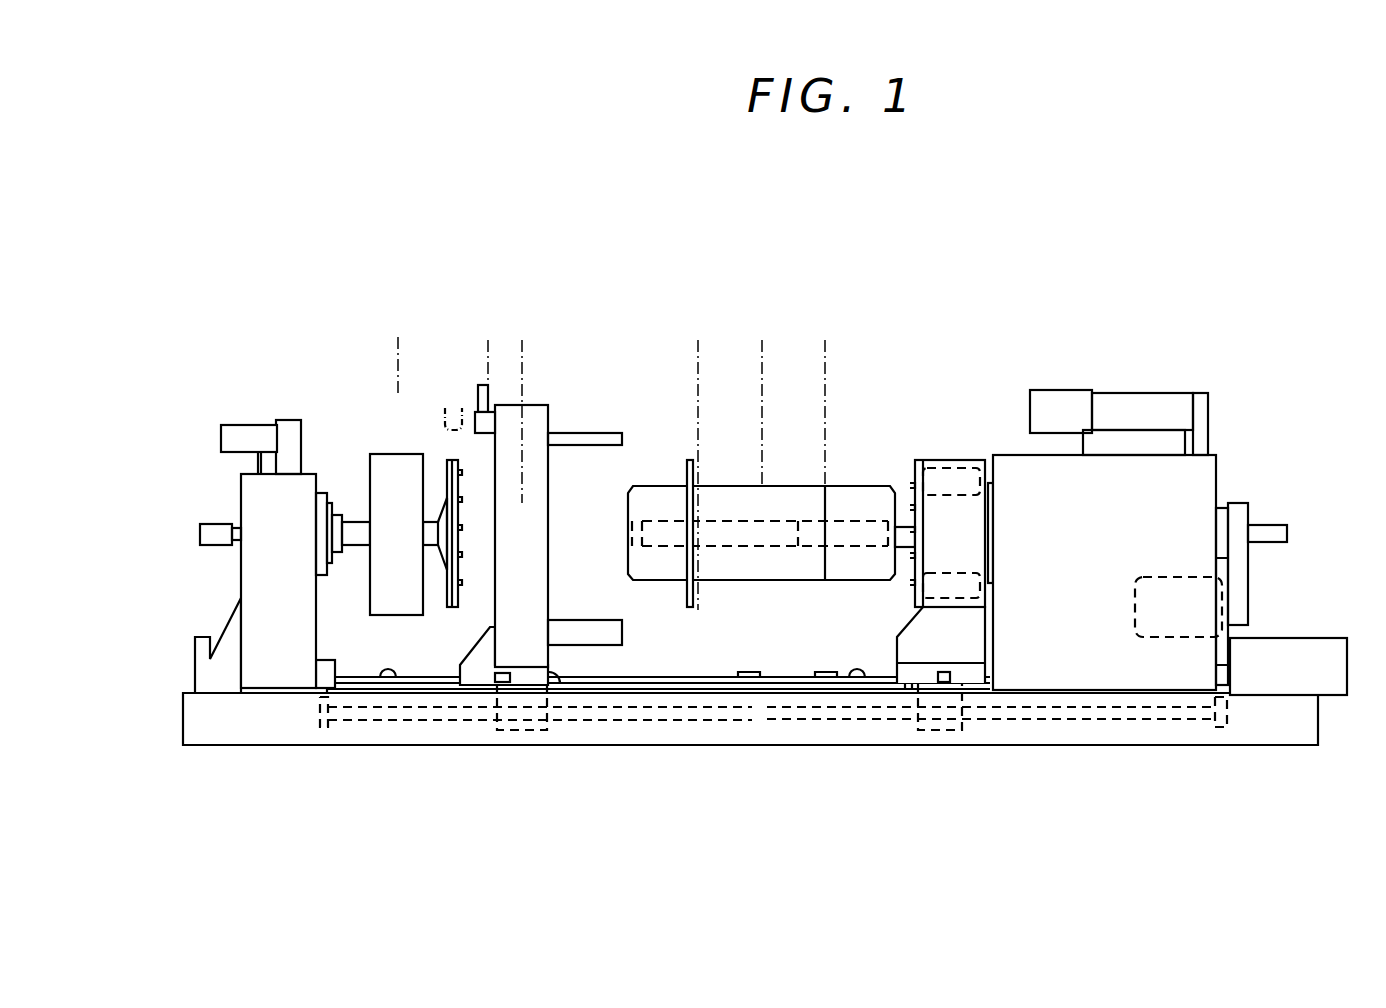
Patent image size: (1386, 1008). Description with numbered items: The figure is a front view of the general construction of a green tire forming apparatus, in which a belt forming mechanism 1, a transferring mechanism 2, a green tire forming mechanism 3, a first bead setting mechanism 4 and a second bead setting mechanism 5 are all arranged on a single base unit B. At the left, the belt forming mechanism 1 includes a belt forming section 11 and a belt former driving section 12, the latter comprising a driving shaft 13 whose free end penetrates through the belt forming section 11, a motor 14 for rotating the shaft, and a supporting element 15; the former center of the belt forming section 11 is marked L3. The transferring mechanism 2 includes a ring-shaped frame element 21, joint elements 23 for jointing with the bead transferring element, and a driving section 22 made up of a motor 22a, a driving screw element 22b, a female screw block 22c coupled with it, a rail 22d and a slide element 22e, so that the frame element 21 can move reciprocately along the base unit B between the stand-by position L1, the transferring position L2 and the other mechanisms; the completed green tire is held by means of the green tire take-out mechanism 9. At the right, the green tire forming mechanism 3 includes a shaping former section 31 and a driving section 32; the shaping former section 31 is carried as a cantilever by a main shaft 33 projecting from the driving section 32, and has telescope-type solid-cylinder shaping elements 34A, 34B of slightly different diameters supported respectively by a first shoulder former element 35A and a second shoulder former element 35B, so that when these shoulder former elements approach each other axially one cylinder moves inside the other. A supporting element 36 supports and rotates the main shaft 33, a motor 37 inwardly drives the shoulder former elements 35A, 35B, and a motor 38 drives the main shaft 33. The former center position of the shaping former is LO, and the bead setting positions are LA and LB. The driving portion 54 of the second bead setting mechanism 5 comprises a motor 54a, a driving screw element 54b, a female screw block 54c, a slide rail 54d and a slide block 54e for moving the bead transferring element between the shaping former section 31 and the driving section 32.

The belt forming mechanism 1 is at (337, 253).
The transferring mechanism 2 is at (554, 248).
The green tire forming mechanism 3 is at (1047, 258).
The first bead setting mechanism 4 is at (444, 457).
The second bead setting mechanism 5 is at (946, 457).
The green tire take-out mechanism 9 is at (592, 421).
The belt forming section 11 is at (378, 442).
The belt former driving section 12 is at (244, 470).
The driving shaft 13 is at (348, 550).
The motor 14 is at (262, 420).
The supporting element 15 is at (240, 495).
The ring-shaped frame element 21 is at (542, 407).
The driving section 22 is at (607, 823).
The motor 22a is at (192, 660).
The driving screw element 22b is at (343, 717).
The female screw block 22c is at (500, 733).
The rail 22d is at (395, 679).
The slide element 22e is at (552, 684).
The joint elements 23 is at (493, 386).
The shaping former section 31 is at (769, 456).
The driving section 32 is at (1168, 472).
The main shaft 33 is at (780, 547).
The shaping element 34A is at (720, 583).
The shaping element 34B is at (790, 582).
The first shoulder former element 35A is at (650, 486).
The second shoulder former element 35B is at (863, 486).
The supporting element 36 is at (1218, 472).
The motor 37 is at (1058, 390).
The motor 38 is at (1252, 597).
The driving portion 54 is at (1318, 823).
The motor 54a is at (1335, 698).
The driving screw element 54b is at (1110, 715).
The female screw block 54c is at (945, 733).
The slide rail 54d is at (858, 679).
The slide block 54e is at (908, 688).
The base unit B is at (753, 745).
The stand-by position L1 is at (528, 407).
The transferring position L2 is at (475, 348).
The former center L3 is at (395, 353).
The bead setting position LA is at (698, 460).
The former center position LO is at (759, 399).
The bead setting position LB is at (821, 445).